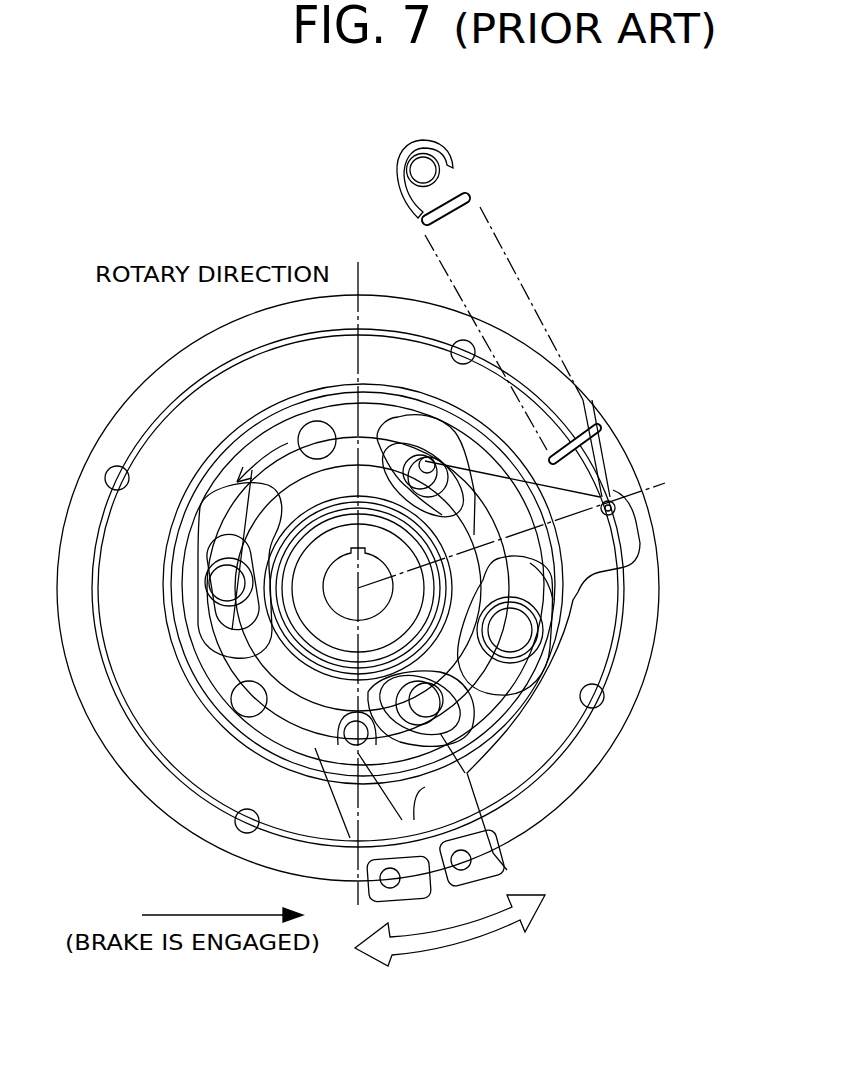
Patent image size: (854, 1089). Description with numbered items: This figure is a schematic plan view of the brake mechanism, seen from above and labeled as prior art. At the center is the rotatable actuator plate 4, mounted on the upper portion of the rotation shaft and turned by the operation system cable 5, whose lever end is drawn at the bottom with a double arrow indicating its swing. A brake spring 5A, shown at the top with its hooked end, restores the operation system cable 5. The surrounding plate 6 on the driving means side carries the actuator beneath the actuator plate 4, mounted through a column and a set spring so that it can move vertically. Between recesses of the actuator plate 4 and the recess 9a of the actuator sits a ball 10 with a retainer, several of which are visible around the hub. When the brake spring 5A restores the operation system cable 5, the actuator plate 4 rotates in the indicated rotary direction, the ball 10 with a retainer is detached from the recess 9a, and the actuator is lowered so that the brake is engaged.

The actuator plate 4 is at (508, 727).
The operation system cable 5 is at (400, 877).
The brake spring 5A is at (502, 245).
The plate 6 is at (587, 757).
The recess 9a is at (532, 415).
The ball with a retainer 10 is at (410, 472).